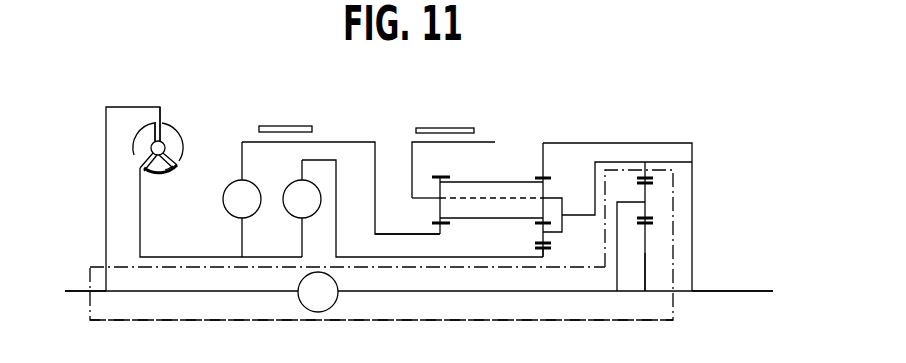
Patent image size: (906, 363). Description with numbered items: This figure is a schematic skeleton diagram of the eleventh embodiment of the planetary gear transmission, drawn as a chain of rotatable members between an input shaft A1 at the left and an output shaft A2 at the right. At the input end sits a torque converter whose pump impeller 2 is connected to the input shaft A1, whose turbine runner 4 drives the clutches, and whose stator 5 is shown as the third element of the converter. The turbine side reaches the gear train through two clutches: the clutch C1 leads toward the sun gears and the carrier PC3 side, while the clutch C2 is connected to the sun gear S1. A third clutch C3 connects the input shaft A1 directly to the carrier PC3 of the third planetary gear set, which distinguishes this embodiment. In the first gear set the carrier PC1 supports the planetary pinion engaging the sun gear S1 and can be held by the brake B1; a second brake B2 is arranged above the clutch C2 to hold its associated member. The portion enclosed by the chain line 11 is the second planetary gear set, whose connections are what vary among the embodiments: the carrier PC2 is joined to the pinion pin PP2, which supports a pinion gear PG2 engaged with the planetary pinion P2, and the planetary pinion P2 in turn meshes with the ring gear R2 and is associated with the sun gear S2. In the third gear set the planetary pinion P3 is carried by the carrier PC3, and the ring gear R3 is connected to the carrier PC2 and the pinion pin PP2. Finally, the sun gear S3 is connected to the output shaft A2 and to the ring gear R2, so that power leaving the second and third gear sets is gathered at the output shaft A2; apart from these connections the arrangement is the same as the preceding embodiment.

The pump impeller 2 is at (185, 141).
The turbine runner 4 is at (137, 157).
The stator 5 is at (170, 176).
The chain line 11 is at (675, 315).
The clutch C1 is at (413, 208).
The clutch C2 is at (242, 199).
The clutch C3 is at (318, 292).
The brake B1 is at (453, 150).
The brake B2 is at (341, 166).
The carrier PC1 is at (412, 198).
The sun gear S1 is at (428, 234).
The planetary pinion P2 is at (543, 193).
The ring gear R2 is at (547, 160).
The carrier PC2 is at (559, 194).
The pinion gear PG2 is at (538, 240).
The pinion pin PP2 is at (553, 237).
The sun gear S2 is at (548, 253).
The planetary pinion P3 is at (645, 210).
The ring gear R3 is at (645, 165).
The carrier PC3 is at (633, 200).
The sun gear S3 is at (645, 253).
The input shaft A1 is at (83, 291).
The output shaft A2 is at (743, 300).